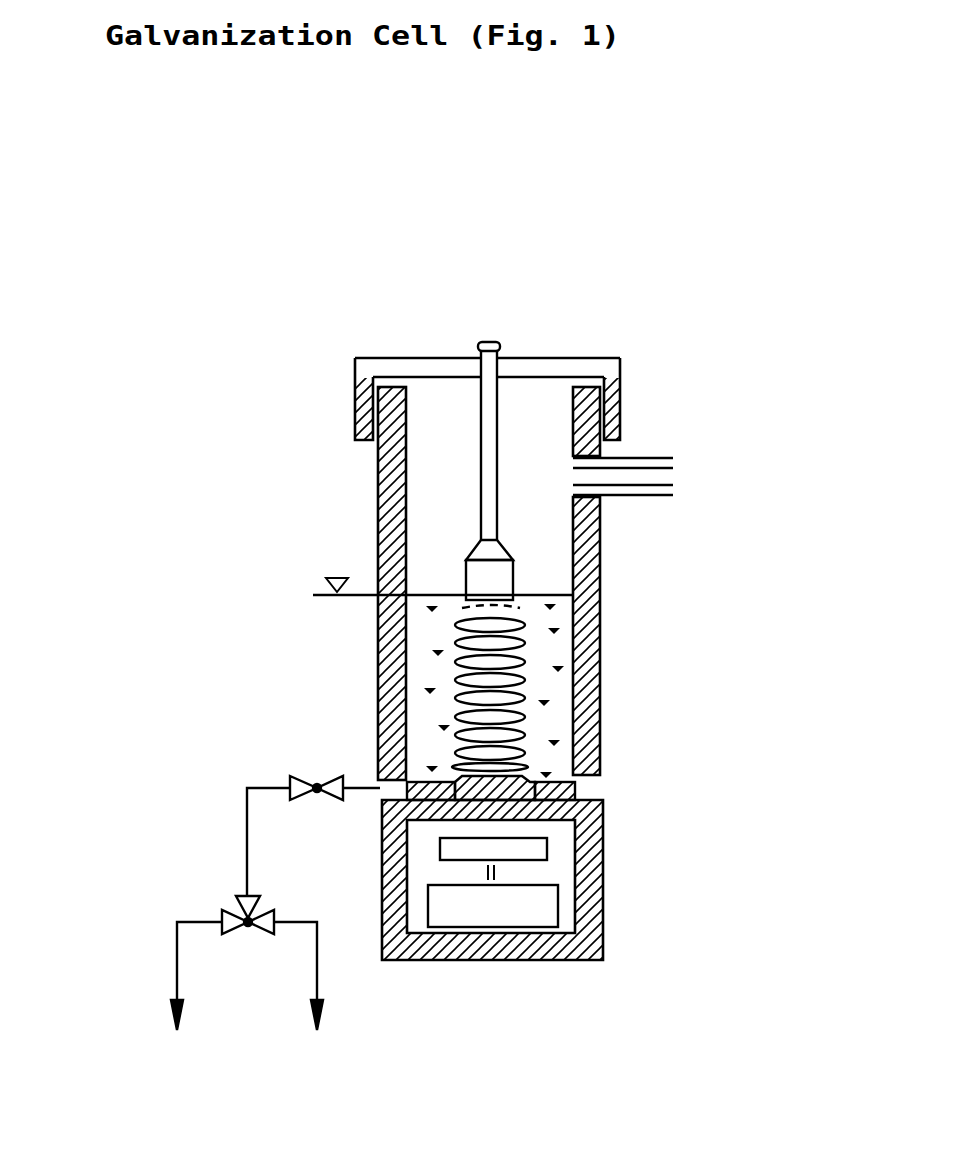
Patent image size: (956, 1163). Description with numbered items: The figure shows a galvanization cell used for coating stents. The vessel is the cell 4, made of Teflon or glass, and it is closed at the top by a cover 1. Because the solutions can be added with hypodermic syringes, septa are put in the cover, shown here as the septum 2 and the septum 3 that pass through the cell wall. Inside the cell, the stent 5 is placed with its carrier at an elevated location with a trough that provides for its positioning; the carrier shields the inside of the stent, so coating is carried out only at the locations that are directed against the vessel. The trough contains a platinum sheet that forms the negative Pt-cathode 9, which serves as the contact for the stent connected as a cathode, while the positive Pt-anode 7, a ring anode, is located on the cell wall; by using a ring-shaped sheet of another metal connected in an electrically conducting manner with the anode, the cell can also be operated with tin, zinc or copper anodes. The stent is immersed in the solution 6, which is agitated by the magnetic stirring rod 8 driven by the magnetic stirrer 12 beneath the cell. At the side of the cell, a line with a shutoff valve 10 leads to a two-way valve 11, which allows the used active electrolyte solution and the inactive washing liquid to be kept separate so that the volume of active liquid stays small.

The cover 1 is at (617, 420).
The septum 2 is at (673, 461).
The septum 3 is at (673, 495).
The cell 4 is at (596, 598).
The stent 5 is at (521, 653).
The solution 6 is at (548, 710).
The Pt-anode 7 is at (576, 765).
The magnetic stirring rod 8 is at (570, 798).
The Pt-cathode 9 is at (576, 805).
The shutoff valve 10 is at (290, 795).
The 2-way valve 11 is at (225, 915).
The magnetic stirrer 12 is at (540, 912).